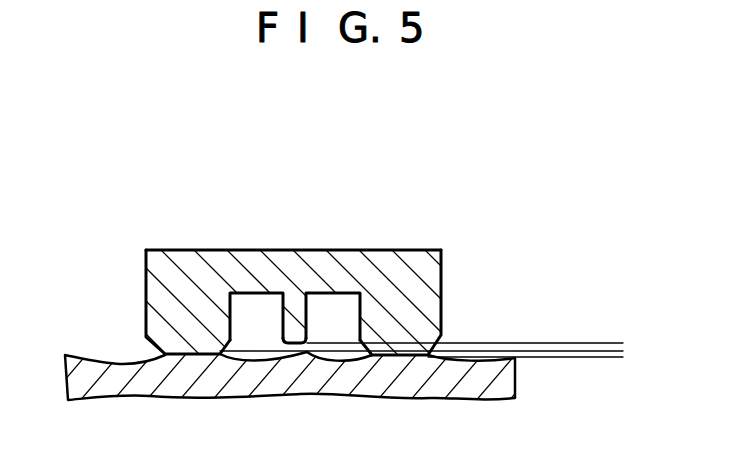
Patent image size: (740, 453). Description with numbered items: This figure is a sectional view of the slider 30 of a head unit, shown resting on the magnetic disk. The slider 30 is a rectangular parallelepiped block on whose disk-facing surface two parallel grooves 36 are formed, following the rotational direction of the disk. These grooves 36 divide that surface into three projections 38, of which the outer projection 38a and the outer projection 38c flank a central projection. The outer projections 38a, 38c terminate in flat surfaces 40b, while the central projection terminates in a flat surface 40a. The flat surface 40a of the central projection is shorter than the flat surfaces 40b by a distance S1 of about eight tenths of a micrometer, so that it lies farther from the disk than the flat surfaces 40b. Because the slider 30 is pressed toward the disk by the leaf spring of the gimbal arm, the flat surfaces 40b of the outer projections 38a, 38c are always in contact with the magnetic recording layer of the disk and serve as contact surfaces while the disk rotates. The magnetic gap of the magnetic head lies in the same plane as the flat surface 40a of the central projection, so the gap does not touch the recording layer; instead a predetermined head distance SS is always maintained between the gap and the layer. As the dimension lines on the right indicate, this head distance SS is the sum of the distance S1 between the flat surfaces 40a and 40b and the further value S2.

The slider 30 is at (396, 250).
The grooves 36 is at (257, 305).
The projections 38 is at (279, 312).
The projection 38a is at (433, 293).
The projection 38c is at (151, 292).
The flat surface of central projection 40a is at (292, 356).
The flat surfaces of outer projections 40b is at (168, 359).
The head distance SS is at (558, 357).
The distance S2 is at (589, 357).
The distance S1 is at (617, 351).